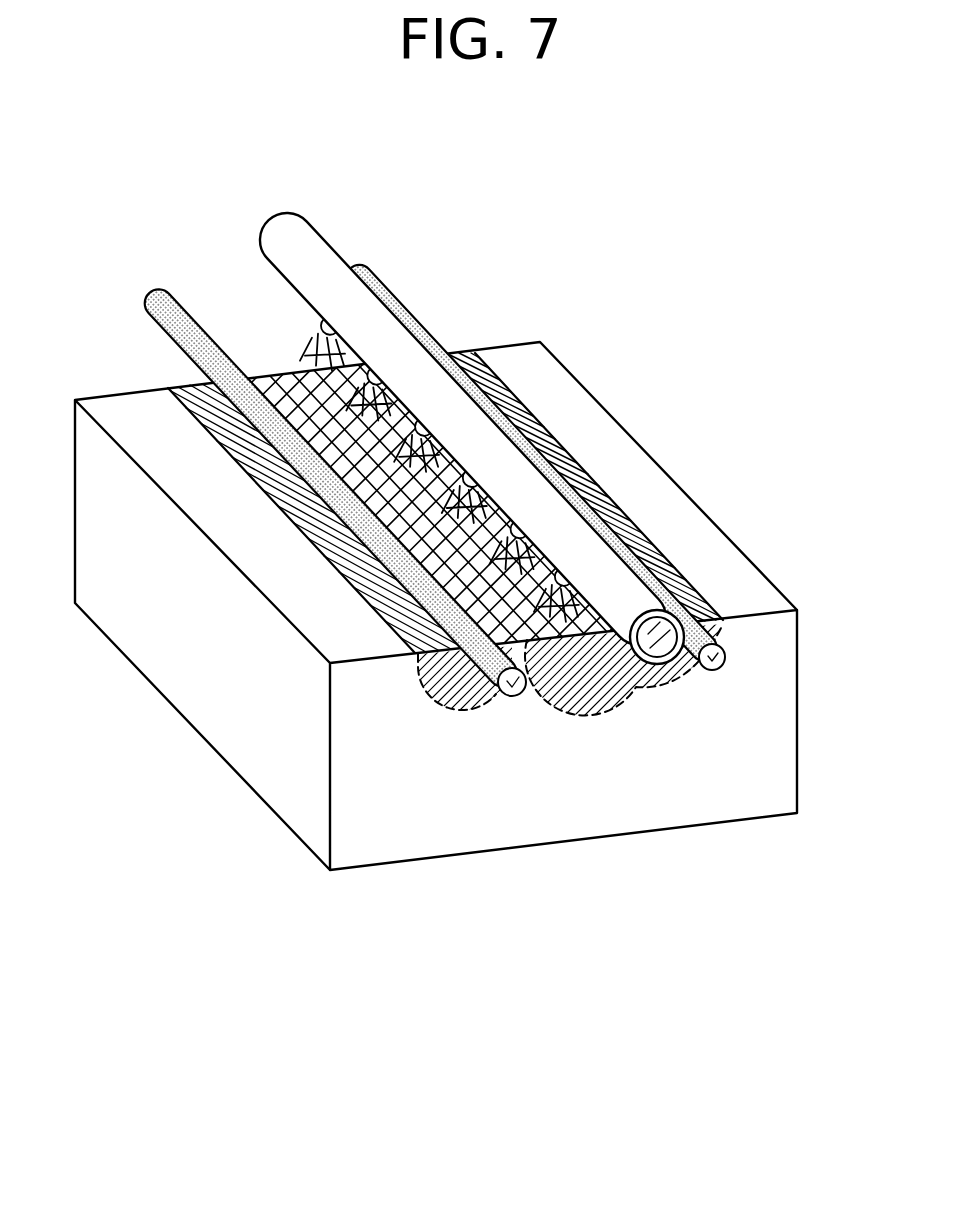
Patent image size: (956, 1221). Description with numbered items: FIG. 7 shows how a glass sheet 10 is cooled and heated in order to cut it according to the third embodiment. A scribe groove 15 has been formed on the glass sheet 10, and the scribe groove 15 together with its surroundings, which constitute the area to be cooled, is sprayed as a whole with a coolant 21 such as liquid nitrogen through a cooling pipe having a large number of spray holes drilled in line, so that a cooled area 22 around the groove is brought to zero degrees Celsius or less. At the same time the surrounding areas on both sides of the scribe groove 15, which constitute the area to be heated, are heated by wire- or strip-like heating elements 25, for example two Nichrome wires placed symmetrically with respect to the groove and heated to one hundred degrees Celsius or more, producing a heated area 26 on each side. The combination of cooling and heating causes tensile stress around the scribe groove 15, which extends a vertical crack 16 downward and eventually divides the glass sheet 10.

The glass sheet 10 is at (187, 675).
The scribe groove 15 is at (467, 508).
The vertical crack 16 is at (600, 703).
The coolant 21 is at (310, 350).
The cooled area 22 is at (587, 560).
The heating element 25 is at (183, 303).
The heated area 26 is at (413, 640).